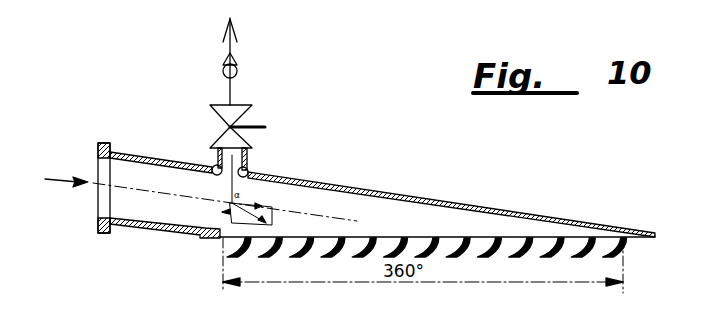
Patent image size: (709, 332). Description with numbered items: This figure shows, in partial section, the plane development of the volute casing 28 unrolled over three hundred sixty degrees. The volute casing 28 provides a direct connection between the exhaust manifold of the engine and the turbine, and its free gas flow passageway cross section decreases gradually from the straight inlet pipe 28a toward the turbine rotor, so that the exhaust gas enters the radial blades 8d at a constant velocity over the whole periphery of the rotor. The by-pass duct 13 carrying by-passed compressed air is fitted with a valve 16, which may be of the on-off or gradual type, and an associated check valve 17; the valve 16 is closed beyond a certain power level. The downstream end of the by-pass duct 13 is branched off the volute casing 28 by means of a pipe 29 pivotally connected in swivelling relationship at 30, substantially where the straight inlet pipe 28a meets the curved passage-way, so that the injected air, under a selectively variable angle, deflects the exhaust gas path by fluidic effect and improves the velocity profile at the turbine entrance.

The by-pass duct 13 is at (232, 47).
The check valve 17 is at (223, 71).
The valve 16 is at (213, 112).
The pipe 29 is at (249, 160).
The swivelling connection 30 is at (252, 170).
The volute casing 28 is at (490, 208).
The straight inlet pipe of the volute casing 28a is at (158, 212).
The radial blades 8d is at (594, 255).